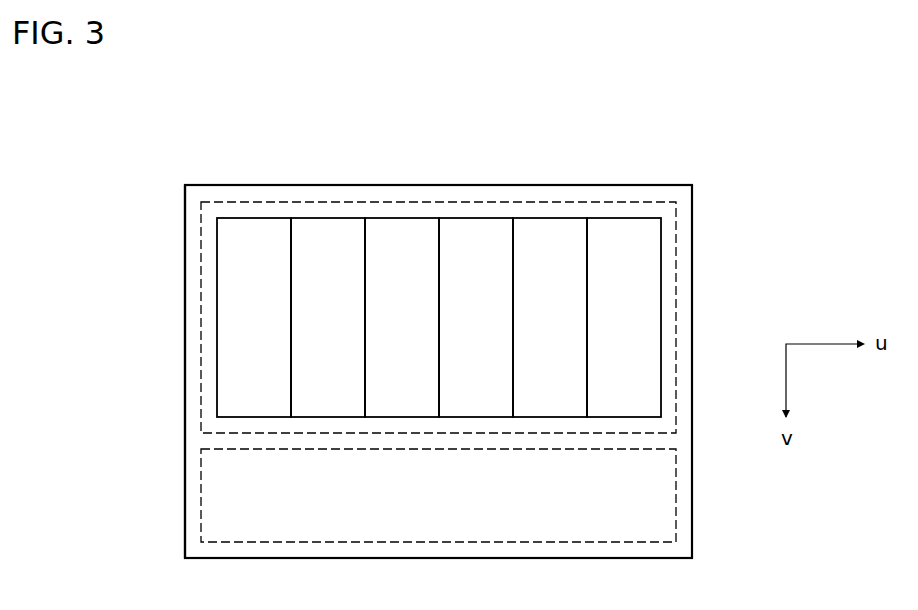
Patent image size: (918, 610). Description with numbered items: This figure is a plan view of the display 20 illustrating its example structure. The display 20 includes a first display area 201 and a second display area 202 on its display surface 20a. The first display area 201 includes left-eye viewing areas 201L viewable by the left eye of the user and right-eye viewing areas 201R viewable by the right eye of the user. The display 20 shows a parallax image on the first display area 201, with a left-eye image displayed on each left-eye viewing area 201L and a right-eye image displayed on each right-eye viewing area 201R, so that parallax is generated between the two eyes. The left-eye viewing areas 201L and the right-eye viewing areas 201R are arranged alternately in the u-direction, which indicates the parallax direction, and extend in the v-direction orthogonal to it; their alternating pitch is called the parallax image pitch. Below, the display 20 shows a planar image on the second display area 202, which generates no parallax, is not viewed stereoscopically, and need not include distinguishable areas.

The display 20 is at (731, 183).
The display surface 20a is at (185, 232).
The first display area 201 is at (676, 263).
The left-eye viewing area 201L is at (243, 228).
The right-eye viewing area 201R is at (322, 230).
The second display area 202 is at (677, 495).